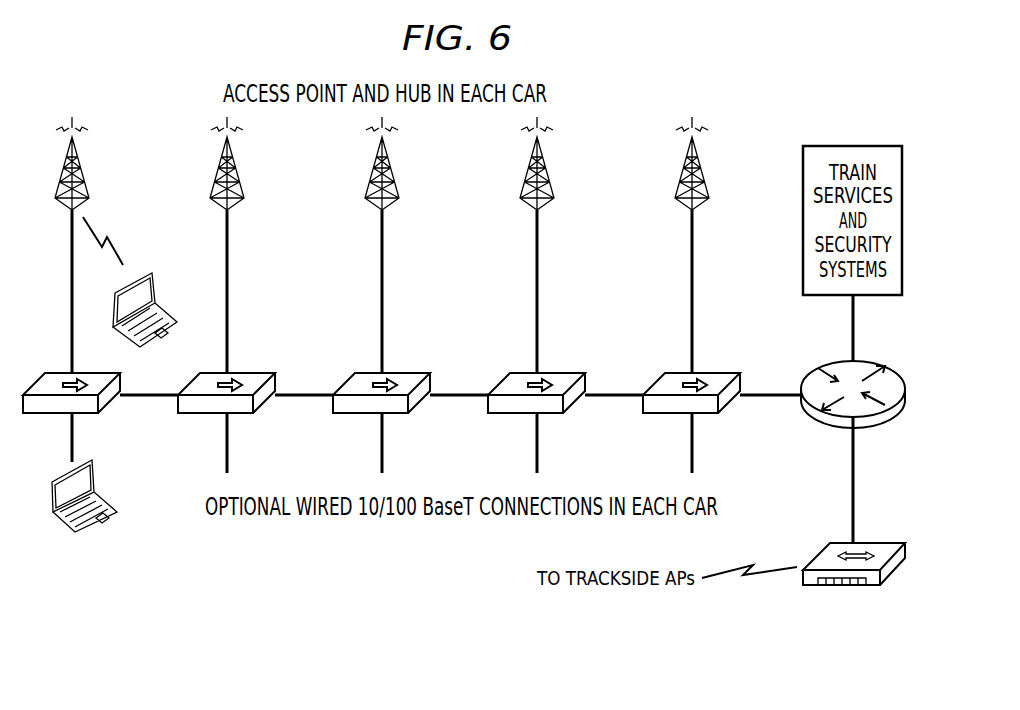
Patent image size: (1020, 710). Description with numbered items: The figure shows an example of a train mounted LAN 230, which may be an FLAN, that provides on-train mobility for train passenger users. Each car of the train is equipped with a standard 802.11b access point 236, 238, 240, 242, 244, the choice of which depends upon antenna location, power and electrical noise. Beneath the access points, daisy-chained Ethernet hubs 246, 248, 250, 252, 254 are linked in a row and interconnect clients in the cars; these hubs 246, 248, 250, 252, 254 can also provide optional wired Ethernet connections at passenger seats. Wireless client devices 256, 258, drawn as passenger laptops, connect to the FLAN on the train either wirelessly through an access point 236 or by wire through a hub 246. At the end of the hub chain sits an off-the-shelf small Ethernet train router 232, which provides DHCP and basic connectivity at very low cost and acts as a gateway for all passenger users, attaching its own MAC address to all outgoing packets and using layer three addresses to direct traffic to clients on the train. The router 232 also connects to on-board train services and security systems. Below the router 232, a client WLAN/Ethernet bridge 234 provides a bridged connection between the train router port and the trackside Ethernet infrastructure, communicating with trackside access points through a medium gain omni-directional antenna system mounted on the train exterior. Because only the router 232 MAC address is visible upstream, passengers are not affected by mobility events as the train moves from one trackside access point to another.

The train mounted LAN 230 is at (757, 665).
The router 232 is at (815, 372).
The client WLAN bridge 234 is at (876, 542).
The access point 236 is at (60, 211).
The access point 238 is at (215, 211).
The access point 240 is at (370, 211).
The access point 242 is at (525, 211).
The access point 244 is at (680, 211).
The Ethernet hub 246 is at (90, 414).
The Ethernet hub 248 is at (245, 414).
The Ethernet hub 250 is at (400, 414).
The Ethernet hub 252 is at (555, 414).
The Ethernet hub 254 is at (710, 414).
The wireless client device 256 is at (105, 506).
The wireless client device 258 is at (154, 287).